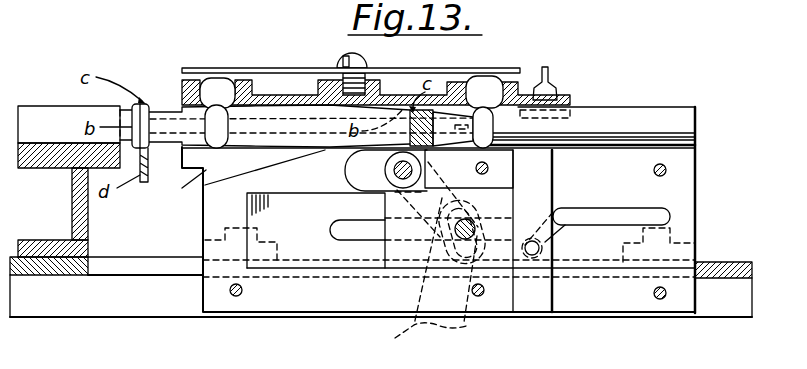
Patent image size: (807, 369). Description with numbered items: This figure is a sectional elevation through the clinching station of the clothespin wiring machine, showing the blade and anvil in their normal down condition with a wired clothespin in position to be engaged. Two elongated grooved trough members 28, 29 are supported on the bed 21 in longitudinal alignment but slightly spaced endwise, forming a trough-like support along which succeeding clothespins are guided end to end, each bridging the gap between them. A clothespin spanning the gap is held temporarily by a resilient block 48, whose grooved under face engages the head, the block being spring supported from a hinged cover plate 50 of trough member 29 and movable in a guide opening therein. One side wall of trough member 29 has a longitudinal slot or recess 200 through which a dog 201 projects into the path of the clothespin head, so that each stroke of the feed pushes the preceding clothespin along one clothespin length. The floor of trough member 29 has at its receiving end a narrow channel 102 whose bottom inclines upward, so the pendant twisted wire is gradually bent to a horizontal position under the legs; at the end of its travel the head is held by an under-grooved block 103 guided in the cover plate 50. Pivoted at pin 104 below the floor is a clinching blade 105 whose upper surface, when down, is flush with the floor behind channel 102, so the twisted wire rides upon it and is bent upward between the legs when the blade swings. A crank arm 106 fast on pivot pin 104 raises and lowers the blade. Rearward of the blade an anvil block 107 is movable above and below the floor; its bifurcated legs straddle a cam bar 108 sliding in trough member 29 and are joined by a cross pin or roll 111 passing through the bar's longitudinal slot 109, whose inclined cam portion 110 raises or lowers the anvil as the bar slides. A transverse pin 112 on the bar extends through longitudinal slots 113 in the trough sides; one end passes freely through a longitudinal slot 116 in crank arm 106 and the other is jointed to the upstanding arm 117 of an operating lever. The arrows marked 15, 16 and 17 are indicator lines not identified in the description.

The axis of first roller / dimension line 15 is at (272, 120).
The axis of second roller / dimension line 16 is at (407, 148).
The axis of pin / dimension line 17 is at (553, 48).
The bed 21 is at (58, 312).
The trough member 28 is at (69, 181).
The trough member 29 is at (668, 118).
The resilient block 48 is at (204, 79).
The hinged cover plate 50 is at (308, 94).
The channel 102 is at (176, 190).
The under-grooved block 103 is at (489, 63).
The pivot pin 104 is at (420, 168).
The blade 105 is at (352, 170).
The crank arm 106 is at (447, 180).
The anvil block 107 is at (543, 170).
The cam bar 108 is at (688, 204).
The longitudinal slot 109 is at (650, 207).
The inclined cam portion 110 is at (555, 231).
The cross pin or roll 111 is at (538, 260).
The transverse pin 112 is at (474, 226).
The longitudinal slots 113 is at (340, 241).
The longitudinal slot 116 is at (432, 209).
The upstanding arm 117 is at (418, 271).
The longitudinal slot or recess 200 is at (183, 125).
The dog 201 is at (497, 128).